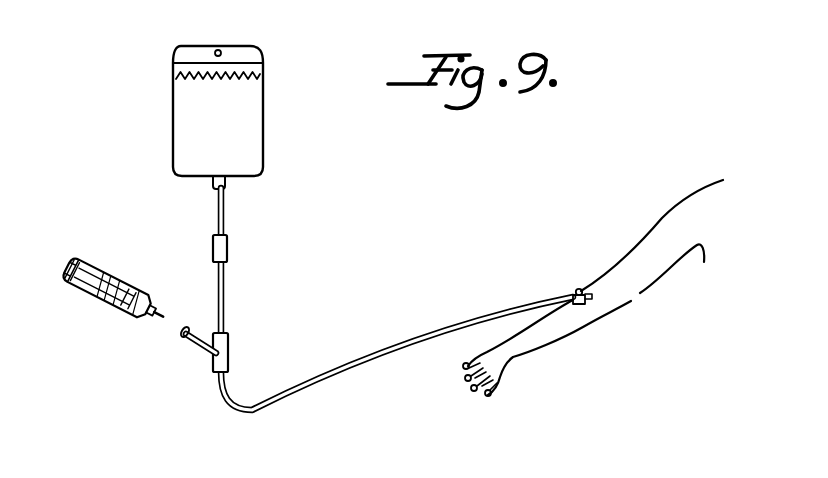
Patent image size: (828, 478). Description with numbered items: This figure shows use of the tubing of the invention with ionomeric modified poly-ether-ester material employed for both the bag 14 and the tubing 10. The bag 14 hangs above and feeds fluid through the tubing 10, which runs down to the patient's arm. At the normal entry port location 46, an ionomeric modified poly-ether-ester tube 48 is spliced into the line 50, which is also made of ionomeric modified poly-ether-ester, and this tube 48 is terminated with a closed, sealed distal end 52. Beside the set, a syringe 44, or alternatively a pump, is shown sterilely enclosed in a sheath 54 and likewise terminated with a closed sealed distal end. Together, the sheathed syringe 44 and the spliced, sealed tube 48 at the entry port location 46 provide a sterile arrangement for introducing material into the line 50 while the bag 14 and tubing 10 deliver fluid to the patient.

The bag 14 is at (355, 126).
The tubing 10 is at (326, 371).
The ionomeric modified poly-ether-ester tube 48 is at (200, 338).
The entry port location 46 is at (206, 384).
The syringe 44 is at (75, 320).
The sheath 54 is at (93, 273).
The line 50 is at (153, 309).
The closed distal end 52 is at (147, 348).